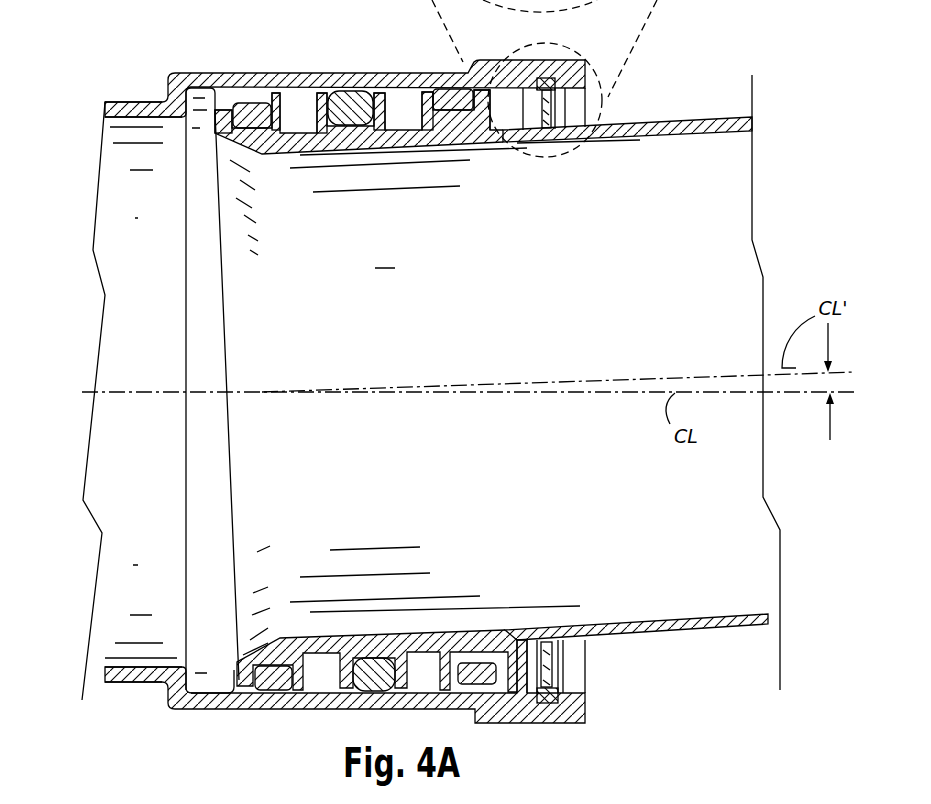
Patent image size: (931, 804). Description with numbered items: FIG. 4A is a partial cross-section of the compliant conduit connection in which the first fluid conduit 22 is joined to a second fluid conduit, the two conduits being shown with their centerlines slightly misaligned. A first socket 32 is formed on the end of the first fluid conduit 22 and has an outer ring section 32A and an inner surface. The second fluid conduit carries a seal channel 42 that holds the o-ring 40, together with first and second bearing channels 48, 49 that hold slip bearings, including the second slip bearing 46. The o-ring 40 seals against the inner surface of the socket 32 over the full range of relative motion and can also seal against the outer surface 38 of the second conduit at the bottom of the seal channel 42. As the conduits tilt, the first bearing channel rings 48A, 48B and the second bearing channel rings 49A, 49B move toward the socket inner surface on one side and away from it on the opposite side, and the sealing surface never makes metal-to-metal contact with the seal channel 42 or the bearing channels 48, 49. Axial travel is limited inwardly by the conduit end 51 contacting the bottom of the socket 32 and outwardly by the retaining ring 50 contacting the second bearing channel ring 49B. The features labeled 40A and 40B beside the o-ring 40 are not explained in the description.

The first fluid conduit 22 is at (118, 98).
The first socket 32 is at (262, 706).
The outer ring section 32A is at (514, 712).
The outer surface 38 is at (680, 115).
The o-ring 40 is at (356, 94).
The seal groove wall 40A is at (328, 134).
The seal groove wall 40B is at (382, 92).
The seal channel 42 is at (367, 140).
The second slip bearing 46 is at (240, 106).
The first bearing channel 48 is at (273, 135).
The first bearing channel ring 48A is at (223, 114).
The first bearing channel ring 48B is at (278, 98).
The second bearing channel 49 is at (462, 118).
The second bearing channel ring 49A is at (423, 90).
The second bearing channel ring 49B is at (481, 96).
The retaining ring 50 is at (552, 82).
The conduit end 51 is at (232, 676).